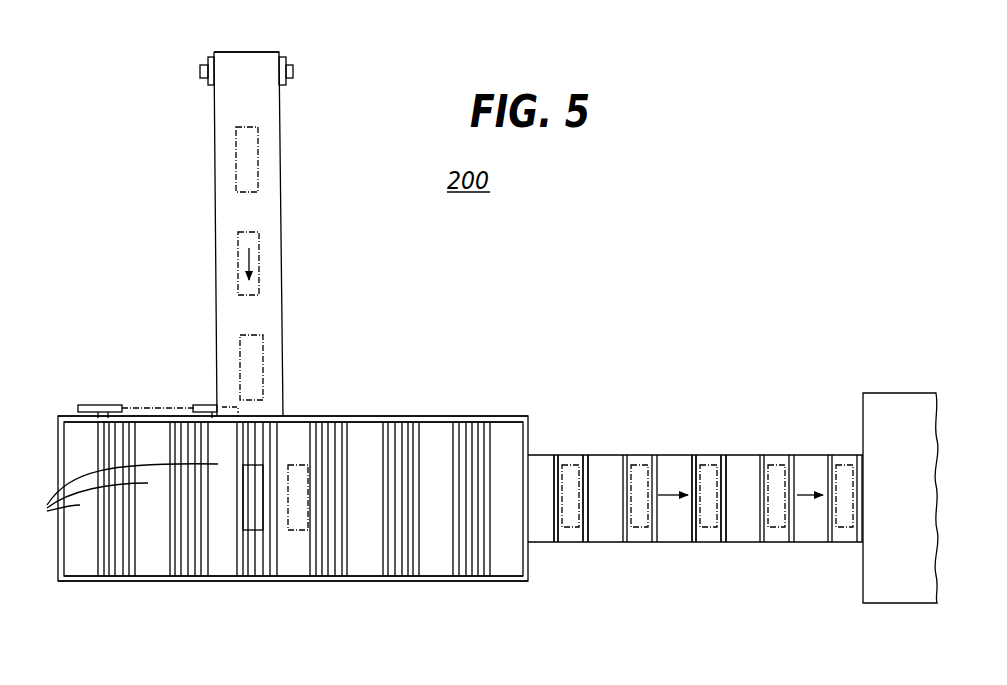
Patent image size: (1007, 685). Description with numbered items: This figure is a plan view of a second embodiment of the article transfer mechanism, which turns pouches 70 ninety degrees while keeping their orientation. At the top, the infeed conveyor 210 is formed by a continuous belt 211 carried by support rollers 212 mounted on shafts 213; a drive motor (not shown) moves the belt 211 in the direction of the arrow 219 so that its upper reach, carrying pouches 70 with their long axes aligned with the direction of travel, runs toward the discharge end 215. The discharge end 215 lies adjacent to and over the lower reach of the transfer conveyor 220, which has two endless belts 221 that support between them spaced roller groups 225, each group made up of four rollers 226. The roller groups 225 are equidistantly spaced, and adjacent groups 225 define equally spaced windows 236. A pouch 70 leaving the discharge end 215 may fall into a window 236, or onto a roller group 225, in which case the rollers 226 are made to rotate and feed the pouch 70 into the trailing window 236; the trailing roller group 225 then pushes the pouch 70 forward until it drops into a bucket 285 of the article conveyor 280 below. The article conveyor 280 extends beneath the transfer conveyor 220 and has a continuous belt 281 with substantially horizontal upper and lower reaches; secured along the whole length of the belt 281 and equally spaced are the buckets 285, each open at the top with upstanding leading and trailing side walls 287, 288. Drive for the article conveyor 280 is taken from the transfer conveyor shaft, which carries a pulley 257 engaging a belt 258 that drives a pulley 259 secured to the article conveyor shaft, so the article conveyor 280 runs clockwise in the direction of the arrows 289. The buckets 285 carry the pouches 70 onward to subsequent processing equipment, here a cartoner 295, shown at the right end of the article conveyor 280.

The pouches 70 is at (258, 158).
The infeed conveyor 210 is at (213, 192).
The continuous belt 211 is at (281, 110).
The support rollers 212 is at (212, 60).
The shafts 213 is at (200, 72).
The discharge end 215 is at (268, 408).
The arrow 219 is at (248, 260).
The transfer conveyor 220 is at (113, 590).
The endless belts 221 is at (440, 416).
The roller groups 225 is at (190, 560).
The rollers 226 is at (492, 556).
The windows 236 is at (111, 493).
The pulley 257 is at (85, 405).
The belt 258 is at (143, 405).
The pulley 259 is at (205, 405).
The article conveyor 280 is at (708, 402).
The continuous belt 281 is at (672, 542).
The buckets 285 is at (570, 542).
The leading side wall 287 is at (590, 454).
The trailing side wall 288 is at (555, 454).
The arrows 289 is at (665, 495).
The cartoner 295 is at (903, 603).